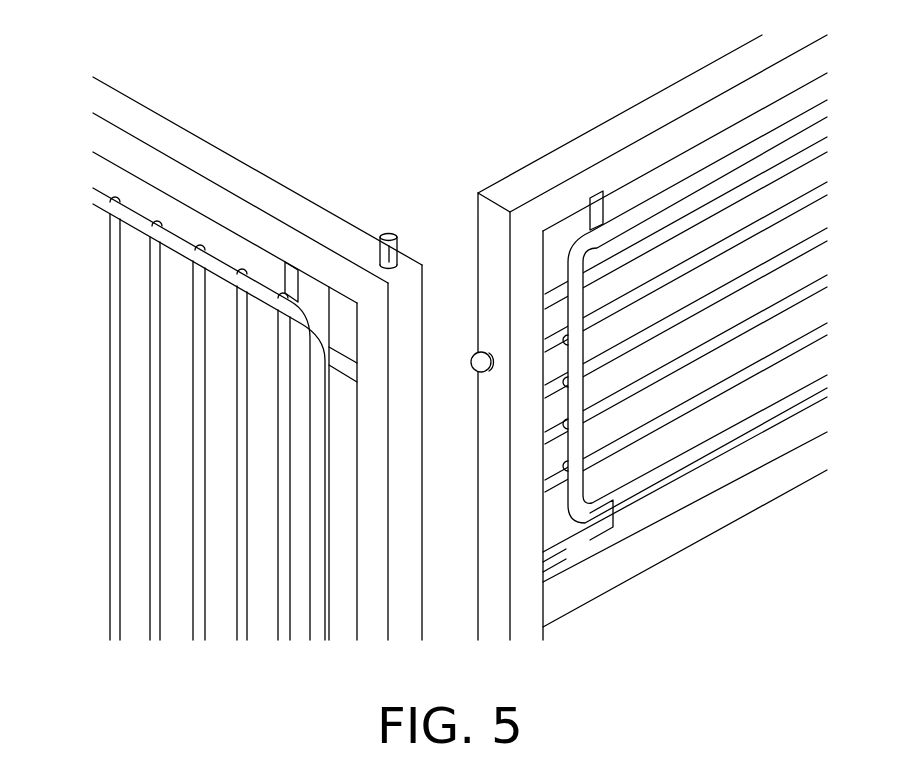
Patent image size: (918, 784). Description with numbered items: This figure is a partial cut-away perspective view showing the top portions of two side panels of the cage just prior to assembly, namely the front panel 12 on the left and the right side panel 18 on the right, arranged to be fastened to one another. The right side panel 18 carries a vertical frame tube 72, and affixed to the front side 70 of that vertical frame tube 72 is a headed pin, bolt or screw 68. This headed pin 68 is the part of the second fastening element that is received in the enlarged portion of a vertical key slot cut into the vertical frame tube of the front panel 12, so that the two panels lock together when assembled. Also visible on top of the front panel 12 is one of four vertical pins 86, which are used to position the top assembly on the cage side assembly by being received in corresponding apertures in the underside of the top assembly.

The front panel 12 is at (97, 453).
The right side panel 18 is at (740, 537).
The headed pin, bolt or screw 68 is at (478, 370).
The front side 70 is at (478, 227).
The vertical frame tube 72 is at (530, 582).
The vertical pin 86 is at (387, 233).